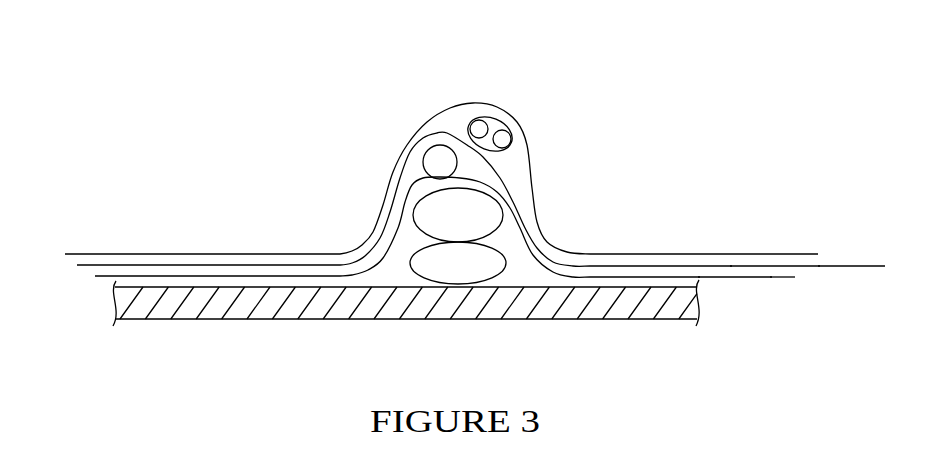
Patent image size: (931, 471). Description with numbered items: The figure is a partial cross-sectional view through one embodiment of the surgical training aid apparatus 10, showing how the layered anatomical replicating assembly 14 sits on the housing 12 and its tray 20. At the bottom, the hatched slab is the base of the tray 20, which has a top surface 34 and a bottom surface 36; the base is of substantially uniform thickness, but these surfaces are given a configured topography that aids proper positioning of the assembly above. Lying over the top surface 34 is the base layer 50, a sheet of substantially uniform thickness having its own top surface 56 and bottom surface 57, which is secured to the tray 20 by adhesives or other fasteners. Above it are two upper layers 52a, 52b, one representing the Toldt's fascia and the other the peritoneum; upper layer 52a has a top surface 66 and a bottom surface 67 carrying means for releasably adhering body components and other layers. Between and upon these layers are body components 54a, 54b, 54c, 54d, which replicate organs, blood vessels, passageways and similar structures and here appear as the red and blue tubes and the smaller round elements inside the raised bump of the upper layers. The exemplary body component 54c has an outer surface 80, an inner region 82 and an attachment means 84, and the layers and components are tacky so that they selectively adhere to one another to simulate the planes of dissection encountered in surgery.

The surgical training aid apparatus 10 is at (574, 58).
The housing 12 is at (105, 348).
The anatomical replicating assembly 14 is at (70, 234).
The tray 20 is at (286, 340).
The top surface 34 is at (163, 287).
The bottom surface 36 is at (186, 321).
The base layer 50 is at (787, 277).
The upper layer 52a is at (860, 266).
The upper layer 52b is at (796, 253).
The body component 54a is at (500, 228).
The body component 54b is at (500, 252).
The body component 54c is at (425, 163).
The body component 54d is at (482, 116).
The top surface 56 is at (673, 276).
The bottom surface 57 is at (748, 277).
The top surface 66 is at (747, 264).
The bottom surface 67 is at (715, 266).
The outer surface 80 is at (413, 148).
The inner region 82 is at (420, 168).
The attachment means 84 is at (438, 131).